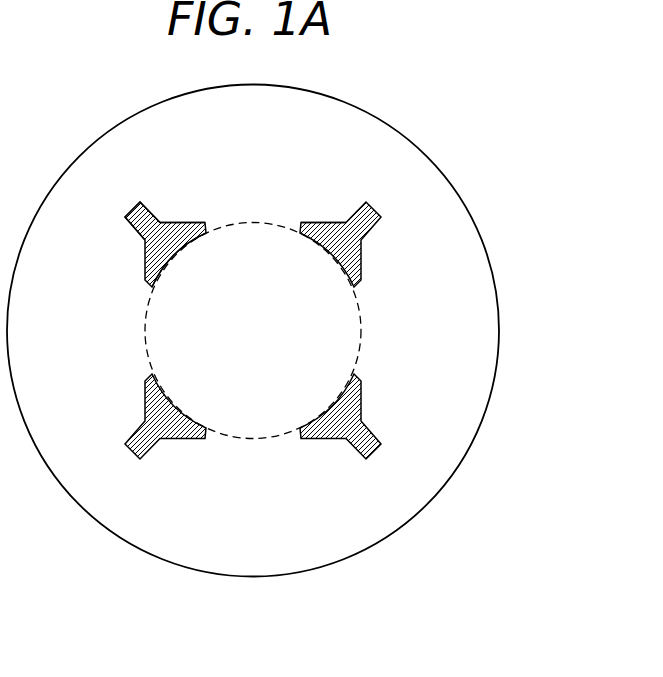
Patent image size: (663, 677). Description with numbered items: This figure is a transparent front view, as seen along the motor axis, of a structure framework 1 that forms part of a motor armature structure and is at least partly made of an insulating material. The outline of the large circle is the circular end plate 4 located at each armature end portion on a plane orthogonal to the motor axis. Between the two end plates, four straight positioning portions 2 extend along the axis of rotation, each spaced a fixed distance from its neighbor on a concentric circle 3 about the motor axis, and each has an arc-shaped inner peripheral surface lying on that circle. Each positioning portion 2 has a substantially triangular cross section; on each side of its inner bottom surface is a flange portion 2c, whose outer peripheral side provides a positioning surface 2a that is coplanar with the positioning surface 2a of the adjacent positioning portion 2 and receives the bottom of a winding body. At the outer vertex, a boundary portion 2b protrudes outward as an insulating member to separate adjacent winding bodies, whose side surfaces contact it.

The structure framework 1 is at (322, 313).
The positioning portion 2 is at (355, 408).
The positioning surface 2a is at (183, 221).
The boundary portion 2b is at (139, 200).
The flange portion 2c is at (208, 234).
The concentric circle 3 is at (362, 333).
The end plate 4 is at (412, 482).